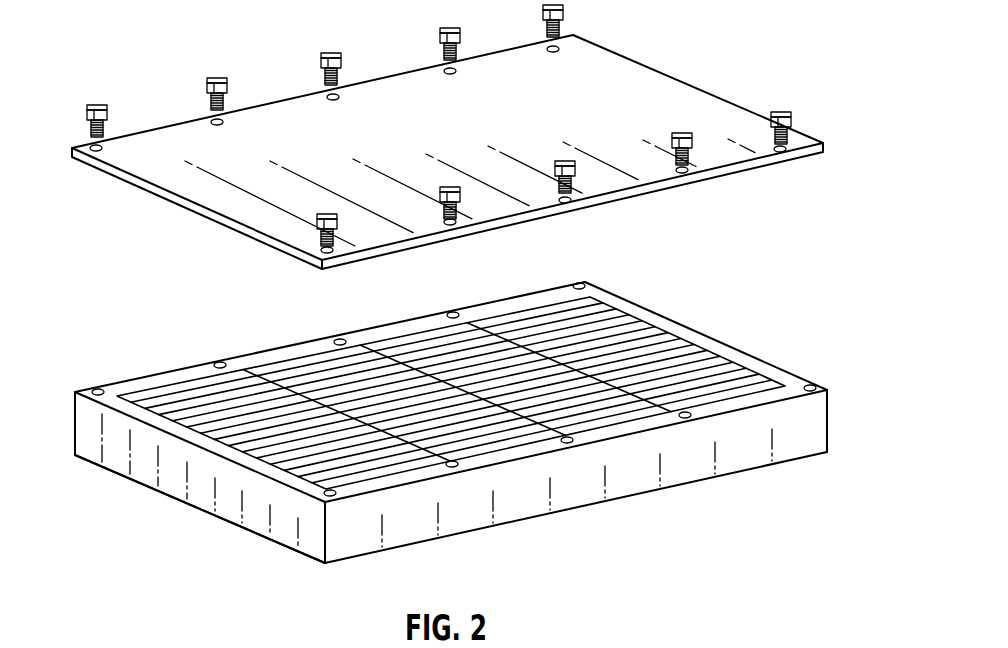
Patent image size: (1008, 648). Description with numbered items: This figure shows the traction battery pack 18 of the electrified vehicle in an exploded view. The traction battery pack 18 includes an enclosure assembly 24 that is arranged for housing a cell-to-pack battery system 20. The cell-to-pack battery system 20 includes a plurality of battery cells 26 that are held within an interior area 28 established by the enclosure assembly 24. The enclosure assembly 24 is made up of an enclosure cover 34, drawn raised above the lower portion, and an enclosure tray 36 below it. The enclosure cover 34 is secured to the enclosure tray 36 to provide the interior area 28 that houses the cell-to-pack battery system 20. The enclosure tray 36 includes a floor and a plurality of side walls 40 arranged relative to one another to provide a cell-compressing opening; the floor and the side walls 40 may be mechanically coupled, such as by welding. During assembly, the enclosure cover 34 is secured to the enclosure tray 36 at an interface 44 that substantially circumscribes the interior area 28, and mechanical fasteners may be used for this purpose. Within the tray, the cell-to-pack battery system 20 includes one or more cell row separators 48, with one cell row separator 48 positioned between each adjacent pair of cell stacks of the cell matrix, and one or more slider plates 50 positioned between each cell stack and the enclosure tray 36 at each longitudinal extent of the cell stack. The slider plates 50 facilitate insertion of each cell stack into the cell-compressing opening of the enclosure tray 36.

The traction battery pack 18 is at (852, 35).
The cell-to-pack battery system 20 is at (603, 325).
The enclosure assembly 24 is at (66, 175).
The battery cells 26 is at (137, 398).
The interior area 28 is at (632, 247).
The enclosure cover 34 is at (270, 135).
The enclosure tray 36 is at (66, 414).
The side walls 40 is at (248, 360).
The interface 44 is at (211, 78).
The cell row separators 48 is at (298, 397).
The slider plates 50 is at (172, 414).